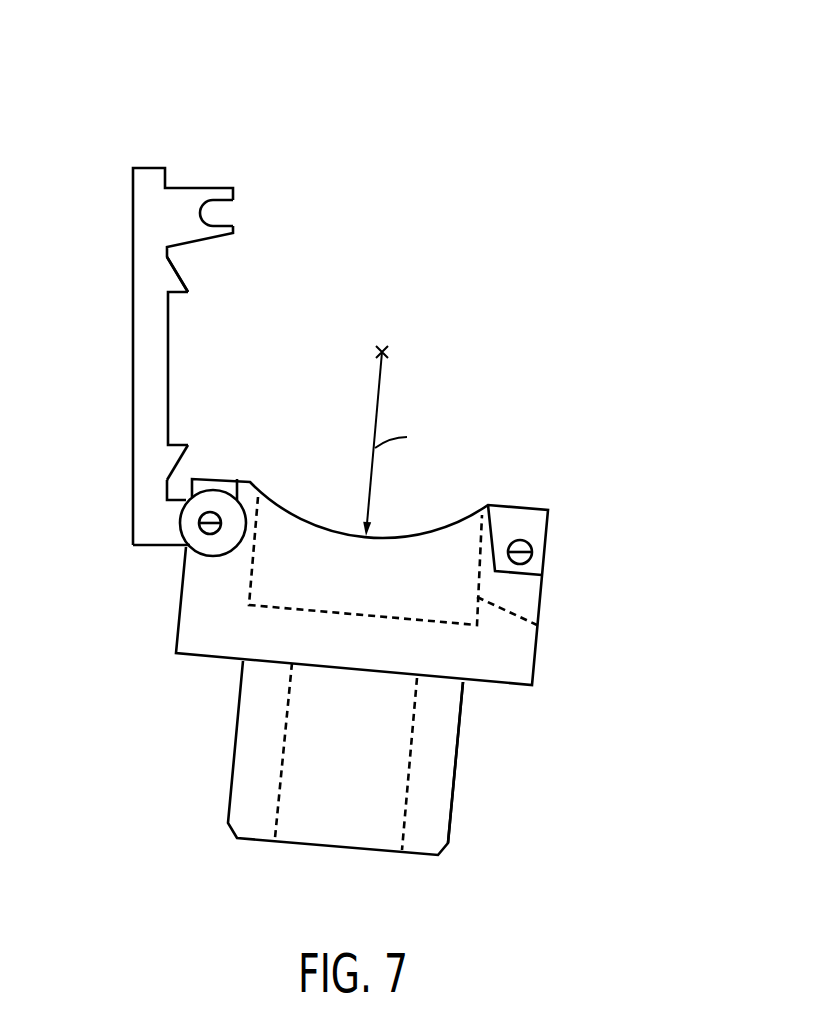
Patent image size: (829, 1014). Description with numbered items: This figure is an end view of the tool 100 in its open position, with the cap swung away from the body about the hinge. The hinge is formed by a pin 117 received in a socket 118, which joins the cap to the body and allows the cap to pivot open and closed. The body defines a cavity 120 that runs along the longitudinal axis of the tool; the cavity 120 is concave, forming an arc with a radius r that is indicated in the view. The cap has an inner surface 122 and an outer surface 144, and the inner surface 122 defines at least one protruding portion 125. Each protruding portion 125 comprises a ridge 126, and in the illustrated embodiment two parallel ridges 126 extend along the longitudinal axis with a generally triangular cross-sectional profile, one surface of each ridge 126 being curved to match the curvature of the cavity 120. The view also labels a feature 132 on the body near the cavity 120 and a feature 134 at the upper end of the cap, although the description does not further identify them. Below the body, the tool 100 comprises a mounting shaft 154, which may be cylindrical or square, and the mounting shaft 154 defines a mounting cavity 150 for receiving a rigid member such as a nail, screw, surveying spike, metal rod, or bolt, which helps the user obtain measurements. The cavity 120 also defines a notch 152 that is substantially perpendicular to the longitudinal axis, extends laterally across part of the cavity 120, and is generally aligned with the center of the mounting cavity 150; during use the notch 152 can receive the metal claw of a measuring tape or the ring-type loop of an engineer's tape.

The tool 100 is at (457, 102).
The pin 117 is at (199, 523).
The socket 118 is at (207, 538).
The cavity 120 is at (463, 496).
The inner surface 122 is at (170, 374).
The protruding portion 125 is at (212, 265).
The ridge 126 is at (177, 293).
The fastener 132 is at (531, 547).
The slot 134 is at (206, 188).
The outer surface 144 is at (132, 312).
The mounting cavity 150 is at (345, 829).
The notch 152 is at (542, 627).
The mounting shaft 154 is at (457, 780).